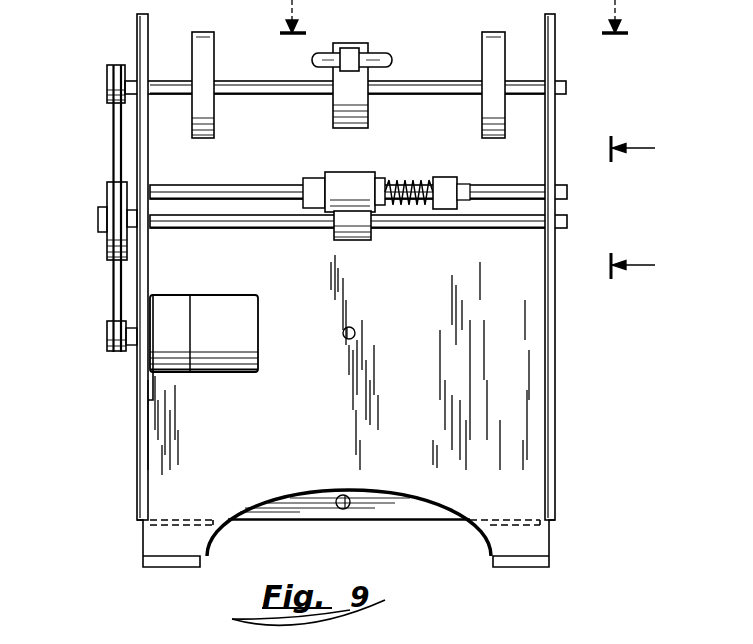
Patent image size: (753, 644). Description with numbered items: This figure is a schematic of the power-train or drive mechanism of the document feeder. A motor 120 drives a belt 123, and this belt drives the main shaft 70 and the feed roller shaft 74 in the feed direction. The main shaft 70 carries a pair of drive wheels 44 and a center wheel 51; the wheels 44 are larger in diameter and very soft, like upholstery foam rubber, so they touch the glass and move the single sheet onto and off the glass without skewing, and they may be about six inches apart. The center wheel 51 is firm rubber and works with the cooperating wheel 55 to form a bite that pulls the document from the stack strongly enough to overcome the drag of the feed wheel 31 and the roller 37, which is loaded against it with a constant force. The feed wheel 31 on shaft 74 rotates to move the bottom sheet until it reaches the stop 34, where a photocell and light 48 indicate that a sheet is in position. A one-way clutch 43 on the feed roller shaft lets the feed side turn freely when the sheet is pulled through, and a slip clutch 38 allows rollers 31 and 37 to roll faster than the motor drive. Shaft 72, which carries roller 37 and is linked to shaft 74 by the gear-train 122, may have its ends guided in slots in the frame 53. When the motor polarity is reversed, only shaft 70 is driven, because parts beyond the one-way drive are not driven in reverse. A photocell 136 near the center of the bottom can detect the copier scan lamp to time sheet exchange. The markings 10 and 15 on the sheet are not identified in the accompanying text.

The frame 10 is at (646, 207).
The direction of movement 15 is at (447, 16).
The feed wheel 31 is at (371, 232).
The stop 34 is at (181, 520).
The separation roller 37 is at (343, 172).
The slip clutch 38 is at (388, 180).
The one-way clutch 43 is at (98, 213).
The drive wheels 44 is at (217, 121).
The photocell and light 48 is at (349, 494).
The center wheel 51 is at (333, 104).
The frame 53 is at (140, 152).
The cooperating wheel 55 is at (350, 56).
The main shaft 70 is at (450, 80).
The shaft 72 is at (466, 179).
The feed roller shaft 74 is at (531, 216).
The motor 120 is at (233, 323).
The gear-train 122 is at (172, 300).
The belt 123 is at (116, 279).
The photocell 136 is at (356, 332).